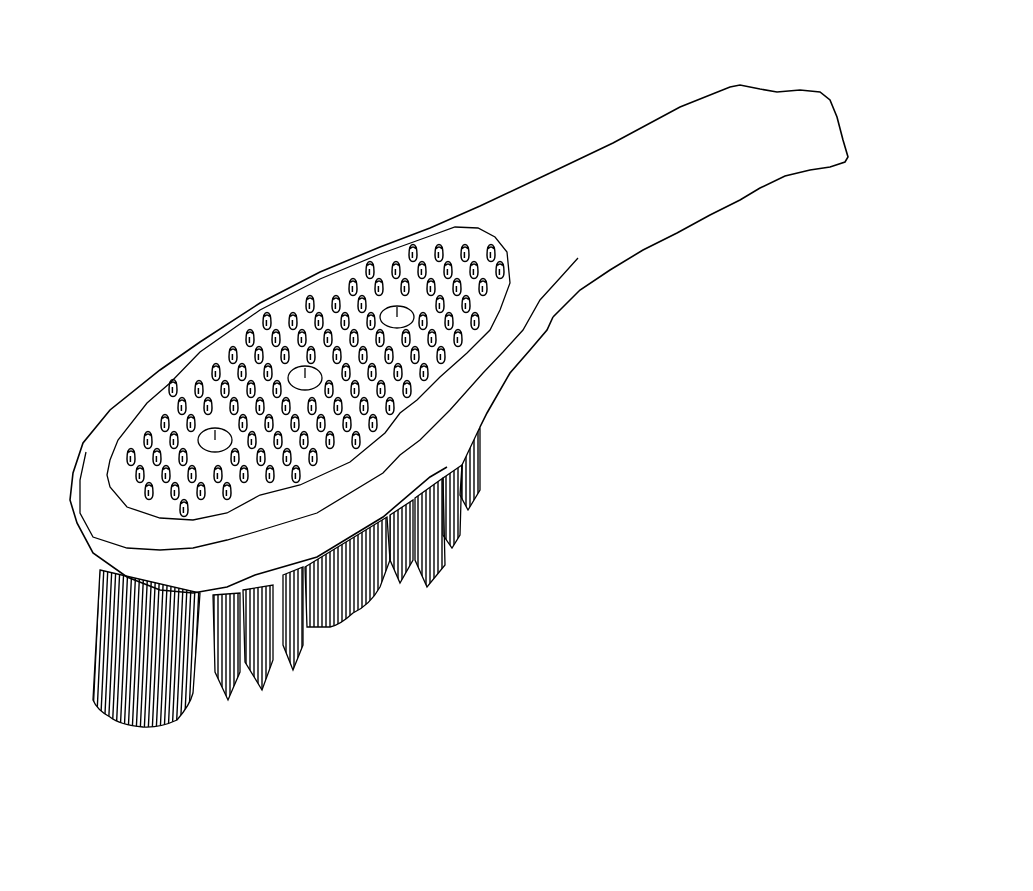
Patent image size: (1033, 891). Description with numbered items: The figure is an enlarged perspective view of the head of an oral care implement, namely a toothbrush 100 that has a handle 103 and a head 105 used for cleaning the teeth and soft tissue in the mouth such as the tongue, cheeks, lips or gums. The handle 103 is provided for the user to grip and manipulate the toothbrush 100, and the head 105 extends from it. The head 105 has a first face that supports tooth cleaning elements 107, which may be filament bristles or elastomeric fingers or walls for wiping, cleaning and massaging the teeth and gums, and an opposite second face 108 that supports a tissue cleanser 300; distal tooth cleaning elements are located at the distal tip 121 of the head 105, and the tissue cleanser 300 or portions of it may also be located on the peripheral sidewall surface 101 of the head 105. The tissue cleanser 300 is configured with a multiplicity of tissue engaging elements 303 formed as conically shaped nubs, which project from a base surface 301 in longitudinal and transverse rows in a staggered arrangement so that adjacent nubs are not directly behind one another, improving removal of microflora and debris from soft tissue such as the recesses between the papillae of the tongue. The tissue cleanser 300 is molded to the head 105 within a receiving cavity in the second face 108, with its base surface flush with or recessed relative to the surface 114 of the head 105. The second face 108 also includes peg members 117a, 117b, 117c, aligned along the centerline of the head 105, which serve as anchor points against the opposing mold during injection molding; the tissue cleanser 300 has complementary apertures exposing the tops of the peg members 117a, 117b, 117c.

The toothbrush 100 is at (160, 130).
The peripheral sidewall surface 101 is at (187, 577).
The handle 103 is at (778, 92).
The head 105 is at (522, 410).
The tooth cleaning elements 107 is at (458, 500).
The second face 108 is at (96, 455).
The surface of the head 114 is at (204, 344).
The peg member 117a is at (171, 378).
The peg member 117b is at (334, 294).
The peg member 117c is at (413, 244).
The distal tip 121 is at (97, 560).
The tissue cleanser 300 is at (453, 237).
The base surface 301 is at (116, 437).
The tissue engaging elements 303 is at (303, 377).